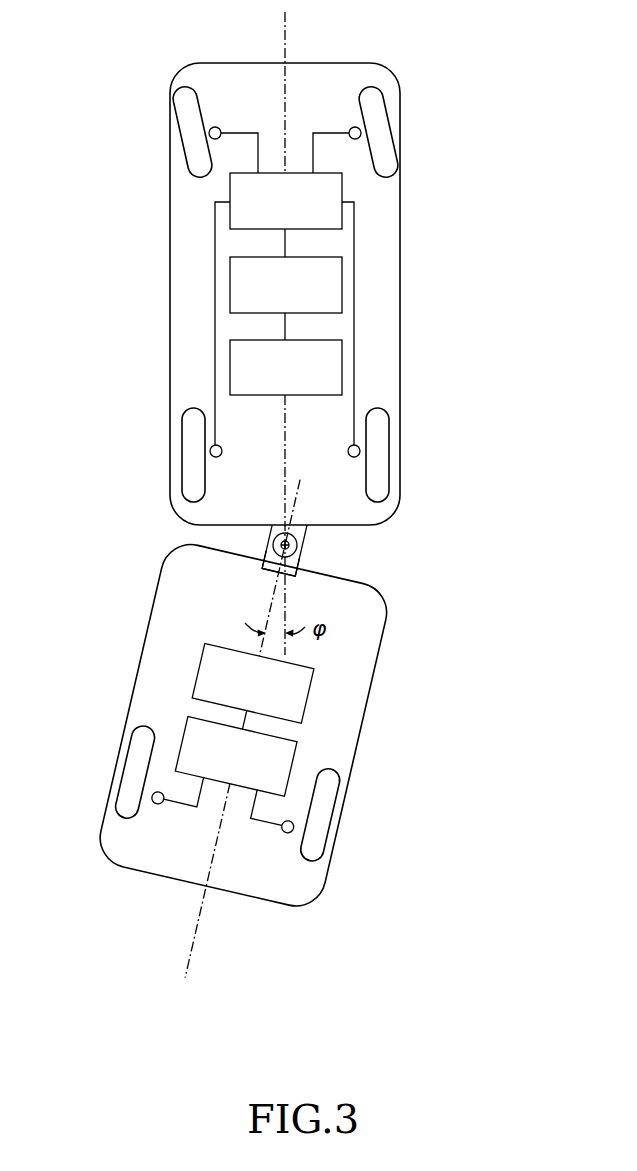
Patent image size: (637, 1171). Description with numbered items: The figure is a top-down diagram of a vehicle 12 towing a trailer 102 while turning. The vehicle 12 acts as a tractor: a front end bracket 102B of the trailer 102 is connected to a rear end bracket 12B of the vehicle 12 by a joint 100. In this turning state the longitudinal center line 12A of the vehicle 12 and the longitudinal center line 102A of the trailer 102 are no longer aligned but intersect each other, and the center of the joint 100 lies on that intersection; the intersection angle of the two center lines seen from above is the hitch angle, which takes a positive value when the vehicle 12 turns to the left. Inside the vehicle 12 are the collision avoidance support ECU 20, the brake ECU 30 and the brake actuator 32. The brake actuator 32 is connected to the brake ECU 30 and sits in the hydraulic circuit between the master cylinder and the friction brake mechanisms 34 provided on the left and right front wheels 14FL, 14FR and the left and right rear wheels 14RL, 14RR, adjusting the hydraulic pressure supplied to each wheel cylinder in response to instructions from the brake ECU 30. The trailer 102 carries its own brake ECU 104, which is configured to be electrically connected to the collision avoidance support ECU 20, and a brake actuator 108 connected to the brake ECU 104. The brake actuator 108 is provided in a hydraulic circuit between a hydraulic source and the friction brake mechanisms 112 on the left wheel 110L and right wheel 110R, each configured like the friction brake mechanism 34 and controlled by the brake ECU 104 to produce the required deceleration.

The vehicle 12 is at (400, 303).
The longitudinal center line of the vehicle 12A is at (287, 45).
The rear end bracket 12B is at (276, 527).
The left front wheel 14FL is at (181, 139).
The right front wheel 14FR is at (389, 127).
The left rear wheel 14RL is at (183, 440).
The right rear wheel 14RR is at (389, 440).
The friction brake mechanism 34 is at (221, 128).
The brake actuator 32 is at (300, 212).
The brake ECU 30 is at (300, 296).
The collision avoidance support ECU 20 is at (300, 379).
The joint 100 is at (330, 551).
The trailer 102 is at (383, 663).
The longitudinal center line of the trailer 102A is at (193, 935).
The front end bracket 102B is at (272, 563).
The brake ECU 104 is at (253, 683).
The brake actuator 108 is at (236, 757).
The left wheel 110L is at (140, 765).
The right wheel 110R is at (322, 821).
The friction brake mechanism 112 is at (160, 804).